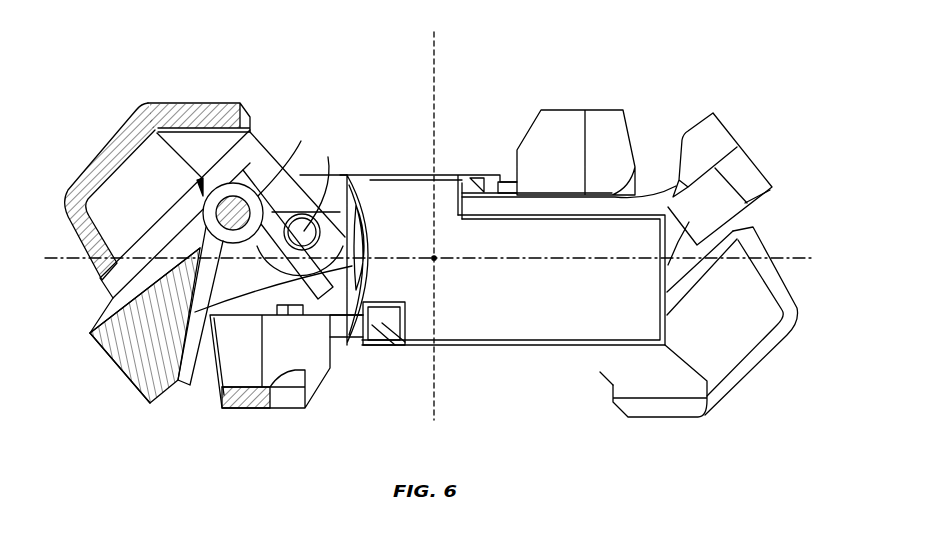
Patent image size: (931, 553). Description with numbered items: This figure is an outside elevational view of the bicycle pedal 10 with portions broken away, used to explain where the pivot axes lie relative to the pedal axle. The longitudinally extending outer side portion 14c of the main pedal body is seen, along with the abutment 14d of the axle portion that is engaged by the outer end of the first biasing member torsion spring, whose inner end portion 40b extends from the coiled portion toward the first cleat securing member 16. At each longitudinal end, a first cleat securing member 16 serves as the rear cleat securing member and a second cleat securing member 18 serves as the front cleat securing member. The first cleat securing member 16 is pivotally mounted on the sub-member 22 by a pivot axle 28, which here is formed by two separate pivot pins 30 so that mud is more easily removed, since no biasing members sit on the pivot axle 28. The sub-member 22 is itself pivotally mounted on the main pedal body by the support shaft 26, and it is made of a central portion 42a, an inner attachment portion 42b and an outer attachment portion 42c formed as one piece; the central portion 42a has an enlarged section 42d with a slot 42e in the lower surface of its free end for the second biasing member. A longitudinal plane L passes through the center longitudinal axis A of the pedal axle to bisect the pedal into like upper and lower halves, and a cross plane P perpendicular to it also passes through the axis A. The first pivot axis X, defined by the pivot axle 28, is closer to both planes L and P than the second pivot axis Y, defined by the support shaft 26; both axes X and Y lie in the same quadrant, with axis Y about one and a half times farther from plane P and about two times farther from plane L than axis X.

The bicycle pedal 10 is at (668, 60).
The outer side portion 14c is at (510, 330).
The abutment 14d is at (360, 333).
The first cleat securing member 16 is at (170, 100).
The second cleat securing member 18 is at (571, 107).
The sub-member 22 is at (101, 357).
The support shaft 26 is at (240, 200).
The pivot axle 28 is at (328, 237).
The pivot pins 30 is at (355, 222).
The inner end portion 40b is at (172, 233).
The central portion 42a is at (125, 385).
The inner attachment portion 42b is at (233, 270).
The outer attachment portion 42c is at (690, 208).
The enlarged section 42d is at (112, 322).
The slot 42e is at (180, 392).
The center longitudinal axis A is at (436, 263).
The longitudinal plane L is at (804, 258).
The cross plane P is at (437, 73).
The first pivot axis X is at (319, 184).
The second pivot axis Y is at (281, 158).